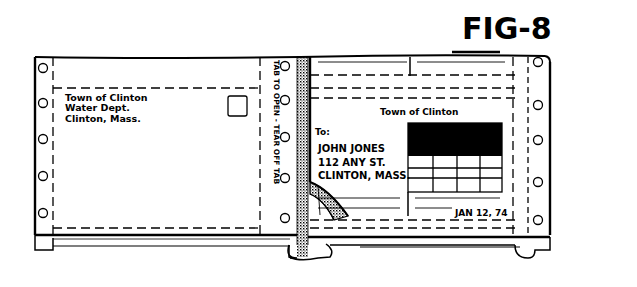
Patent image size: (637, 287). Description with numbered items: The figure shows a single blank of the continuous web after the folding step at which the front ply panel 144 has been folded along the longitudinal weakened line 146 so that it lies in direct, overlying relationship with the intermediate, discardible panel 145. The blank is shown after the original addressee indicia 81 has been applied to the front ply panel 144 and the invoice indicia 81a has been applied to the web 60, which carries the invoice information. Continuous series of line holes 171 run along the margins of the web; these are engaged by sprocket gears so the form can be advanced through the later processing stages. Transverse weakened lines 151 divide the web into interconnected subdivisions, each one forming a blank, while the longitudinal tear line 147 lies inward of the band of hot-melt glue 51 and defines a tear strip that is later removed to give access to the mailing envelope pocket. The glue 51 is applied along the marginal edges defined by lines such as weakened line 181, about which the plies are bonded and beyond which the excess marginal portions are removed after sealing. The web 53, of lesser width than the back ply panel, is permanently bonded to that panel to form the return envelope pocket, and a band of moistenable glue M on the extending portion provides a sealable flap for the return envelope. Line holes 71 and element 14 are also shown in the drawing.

The front ply panel 144 is at (148, 69).
The line holes 171 is at (34, 72).
The glue 51 is at (310, 60).
The intermediate discardible panel 145 is at (367, 72).
The web 60 is at (431, 58).
The right margin perforations 71 is at (545, 124).
The invoice indicia 81a is at (408, 136).
The weakened line 181 is at (54, 163).
The original addressee indicia 81 is at (157, 180).
The moistenable glue M is at (304, 208).
The longitudinal weakened line 146 is at (34, 238).
The transverse weakened line 151 is at (292, 261).
The tear line 147 is at (287, 254).
The adhesive bottom 14 is at (320, 251).
The web 53 is at (439, 244).